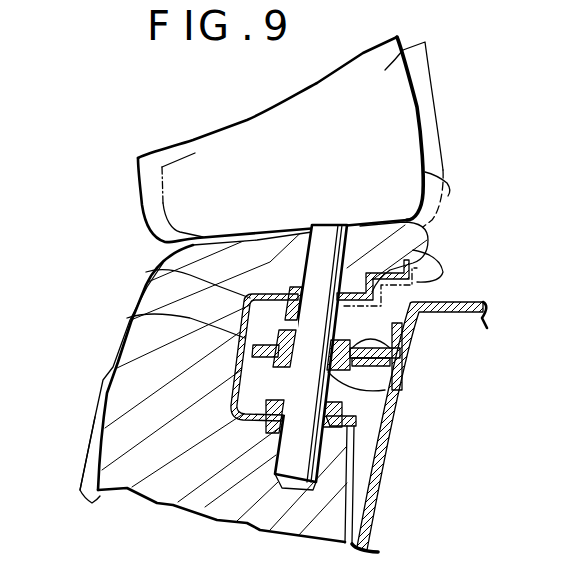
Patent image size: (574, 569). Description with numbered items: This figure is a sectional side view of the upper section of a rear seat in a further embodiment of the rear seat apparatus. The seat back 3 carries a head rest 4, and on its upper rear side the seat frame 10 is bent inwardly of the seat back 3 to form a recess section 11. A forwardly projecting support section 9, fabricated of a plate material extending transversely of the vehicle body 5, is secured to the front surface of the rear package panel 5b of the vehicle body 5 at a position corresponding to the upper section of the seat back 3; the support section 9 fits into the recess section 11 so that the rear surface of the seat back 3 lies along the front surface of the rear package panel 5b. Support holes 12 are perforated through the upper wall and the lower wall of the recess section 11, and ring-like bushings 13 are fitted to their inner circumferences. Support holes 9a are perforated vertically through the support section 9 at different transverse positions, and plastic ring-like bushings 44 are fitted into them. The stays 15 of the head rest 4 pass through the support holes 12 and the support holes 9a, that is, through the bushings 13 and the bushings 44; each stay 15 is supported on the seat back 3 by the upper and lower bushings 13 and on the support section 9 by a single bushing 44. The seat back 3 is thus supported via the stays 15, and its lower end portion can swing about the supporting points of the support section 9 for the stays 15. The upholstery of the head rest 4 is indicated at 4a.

The seat back 3 is at (96, 419).
The head rest 4 is at (141, 198).
The seat back cover 4a is at (440, 178).
The vehicle body 5 is at (455, 311).
The rear package panel 5b is at (363, 532).
The support section 9 is at (132, 322).
The support holes 9a is at (342, 380).
The seat frame 10 is at (153, 274).
The recess section 11 is at (250, 388).
The support holes 12 is at (378, 292).
The ring-like bushings 13 is at (312, 225).
The stays 15 is at (220, 520).
The ring-like bushings 44 is at (358, 345).